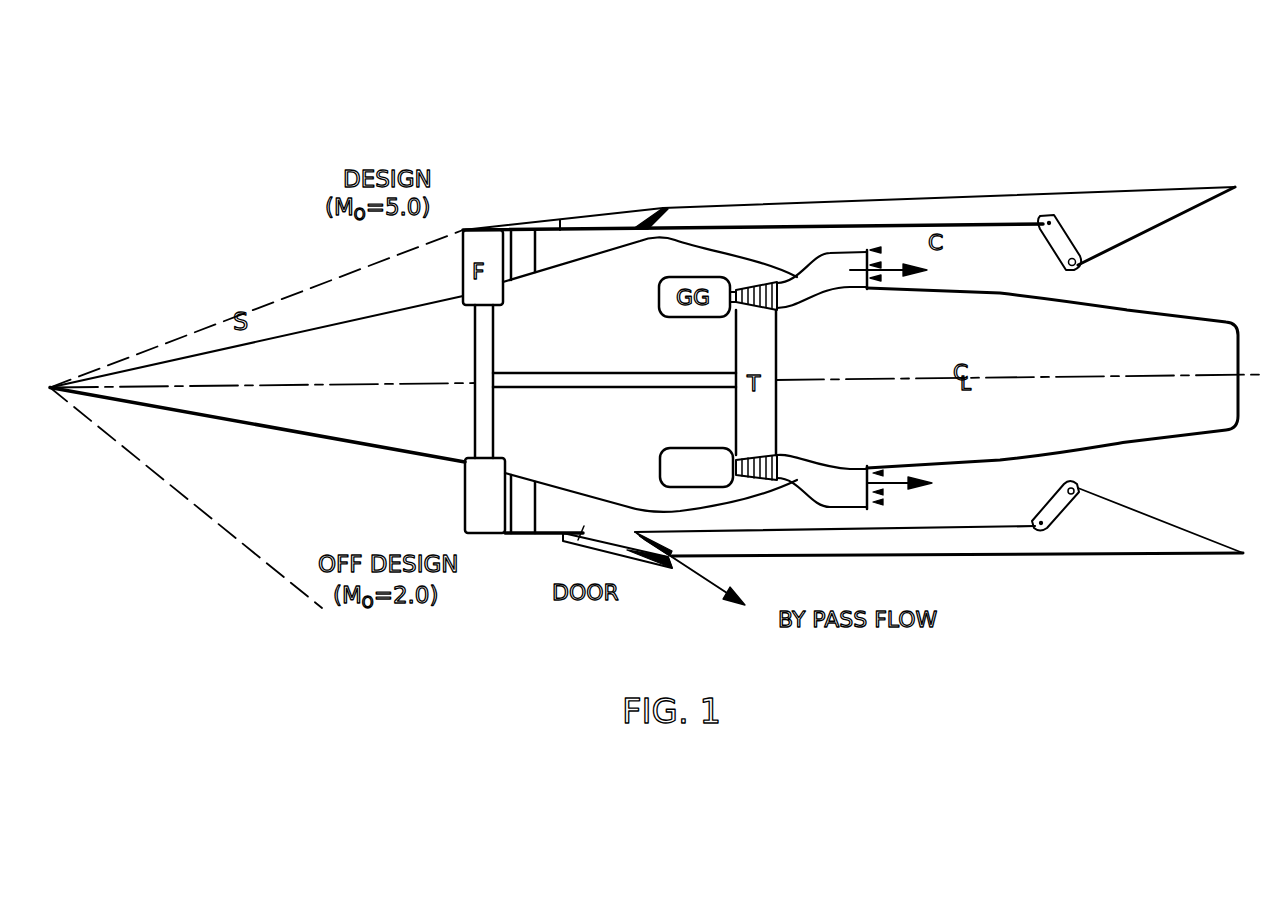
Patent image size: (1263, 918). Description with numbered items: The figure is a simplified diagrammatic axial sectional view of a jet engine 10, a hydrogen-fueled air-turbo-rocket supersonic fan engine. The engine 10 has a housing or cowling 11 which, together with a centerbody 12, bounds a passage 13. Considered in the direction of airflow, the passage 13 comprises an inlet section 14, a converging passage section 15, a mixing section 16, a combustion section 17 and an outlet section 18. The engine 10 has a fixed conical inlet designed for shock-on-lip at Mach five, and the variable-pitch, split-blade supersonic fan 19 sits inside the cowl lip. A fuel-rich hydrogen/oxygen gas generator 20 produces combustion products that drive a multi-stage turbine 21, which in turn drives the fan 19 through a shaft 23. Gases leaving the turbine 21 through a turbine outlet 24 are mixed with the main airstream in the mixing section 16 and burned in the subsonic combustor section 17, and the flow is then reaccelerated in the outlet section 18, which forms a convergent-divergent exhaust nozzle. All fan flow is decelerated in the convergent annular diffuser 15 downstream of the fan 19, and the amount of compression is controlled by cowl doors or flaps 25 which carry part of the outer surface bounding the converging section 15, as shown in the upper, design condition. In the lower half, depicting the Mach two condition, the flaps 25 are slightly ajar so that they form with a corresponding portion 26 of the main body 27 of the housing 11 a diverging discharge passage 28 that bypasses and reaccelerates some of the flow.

The jet engine 10 is at (712, 130).
The housing or cowling 11 is at (850, 203).
The centerbody 12 is at (468, 512).
The passage 13 is at (790, 238).
The inlet section 14 is at (505, 535).
The converging passage section 15 is at (581, 529).
The mixing section 16 is at (807, 518).
The combustion section 17 is at (983, 517).
The outlet section 18 is at (1085, 478).
The fan 19 is at (487, 229).
The gas generator 20 is at (673, 316).
The multi-stage turbine 21 is at (757, 282).
The shaft 23 is at (608, 390).
The turbine outlet 24 is at (853, 252).
The cowl doors or flaps 25 is at (606, 213).
The portion of main body 26 is at (687, 535).
The main body of housing 27 is at (745, 548).
The discharge passage 28 is at (661, 557).